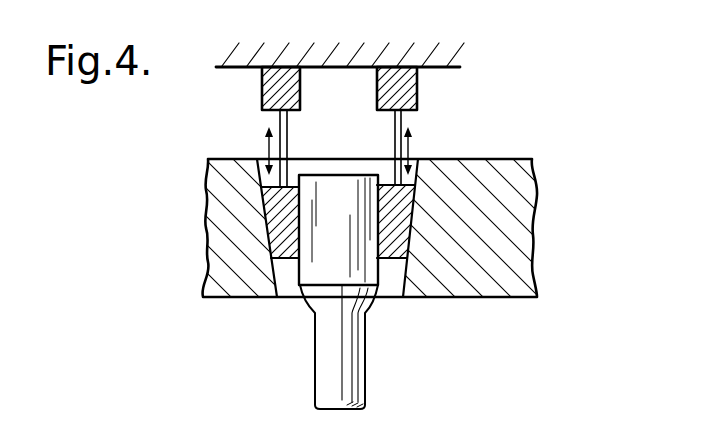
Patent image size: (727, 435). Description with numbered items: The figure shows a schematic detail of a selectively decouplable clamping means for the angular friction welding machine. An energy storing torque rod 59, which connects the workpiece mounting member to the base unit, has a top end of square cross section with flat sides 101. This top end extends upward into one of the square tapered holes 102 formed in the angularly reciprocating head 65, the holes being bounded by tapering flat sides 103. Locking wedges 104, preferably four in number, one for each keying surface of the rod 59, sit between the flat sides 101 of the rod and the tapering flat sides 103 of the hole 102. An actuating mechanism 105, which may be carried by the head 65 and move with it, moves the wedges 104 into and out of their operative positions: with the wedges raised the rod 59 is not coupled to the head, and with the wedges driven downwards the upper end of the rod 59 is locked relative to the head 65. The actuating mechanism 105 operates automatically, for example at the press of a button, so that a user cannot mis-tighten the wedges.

The angularly reciprocating head 65 is at (523, 265).
The actuating mechanism 105 is at (400, 83).
The tapering flat sides 103 is at (417, 163).
The locking wedges 104 is at (280, 219).
The flat sides 101 is at (332, 262).
The square tapered holes 102 is at (390, 268).
The energy storing torque rod 59 is at (352, 386).